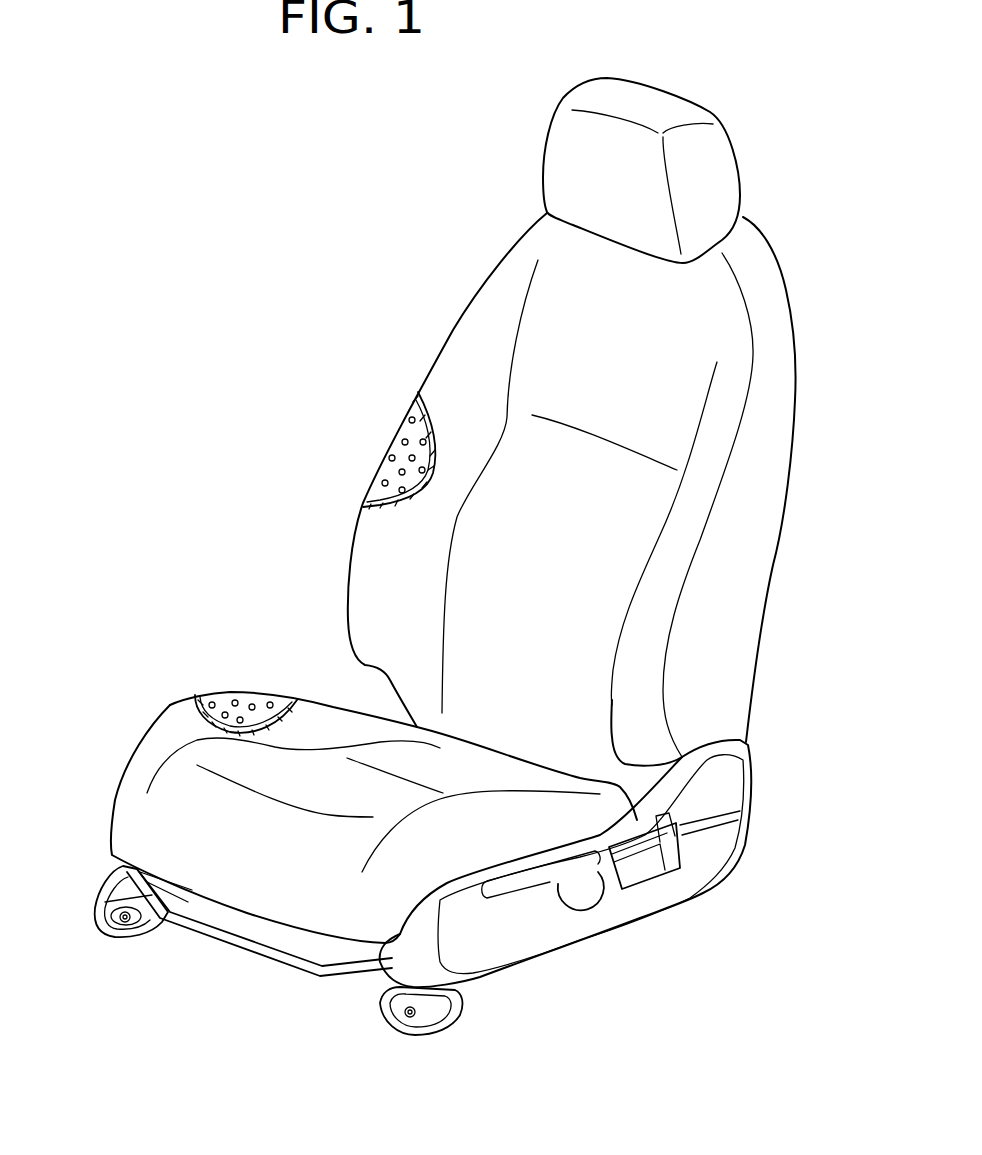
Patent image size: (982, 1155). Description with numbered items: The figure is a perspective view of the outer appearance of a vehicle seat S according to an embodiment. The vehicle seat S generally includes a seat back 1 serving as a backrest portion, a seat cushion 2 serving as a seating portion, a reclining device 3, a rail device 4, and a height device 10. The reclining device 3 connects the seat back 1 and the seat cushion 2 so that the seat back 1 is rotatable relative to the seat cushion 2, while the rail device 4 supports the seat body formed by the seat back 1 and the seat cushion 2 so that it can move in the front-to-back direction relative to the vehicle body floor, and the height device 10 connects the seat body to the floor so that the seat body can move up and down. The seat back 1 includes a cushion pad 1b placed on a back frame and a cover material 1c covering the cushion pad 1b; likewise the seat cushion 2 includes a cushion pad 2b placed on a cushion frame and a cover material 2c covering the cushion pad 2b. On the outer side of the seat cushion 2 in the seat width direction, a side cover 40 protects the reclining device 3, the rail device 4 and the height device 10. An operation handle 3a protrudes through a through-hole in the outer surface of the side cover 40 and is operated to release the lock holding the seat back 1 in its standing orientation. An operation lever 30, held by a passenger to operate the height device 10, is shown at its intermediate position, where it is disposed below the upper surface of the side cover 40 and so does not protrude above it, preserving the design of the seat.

The vehicle seat S is at (119, 147).
The seat back 1 is at (253, 322).
The cushion pad 1b is at (383, 447).
The cover material 1c is at (377, 500).
The seat cushion 2 is at (57, 652).
The cushion pad 2b is at (258, 693).
The cover material 2c is at (173, 715).
The reclining device 3 is at (611, 909).
The operation handle 3a is at (660, 848).
The height device 10 is at (630, 913).
The operation lever 30 is at (580, 887).
The rail device 4 is at (228, 940).
The side cover 40 is at (503, 926).